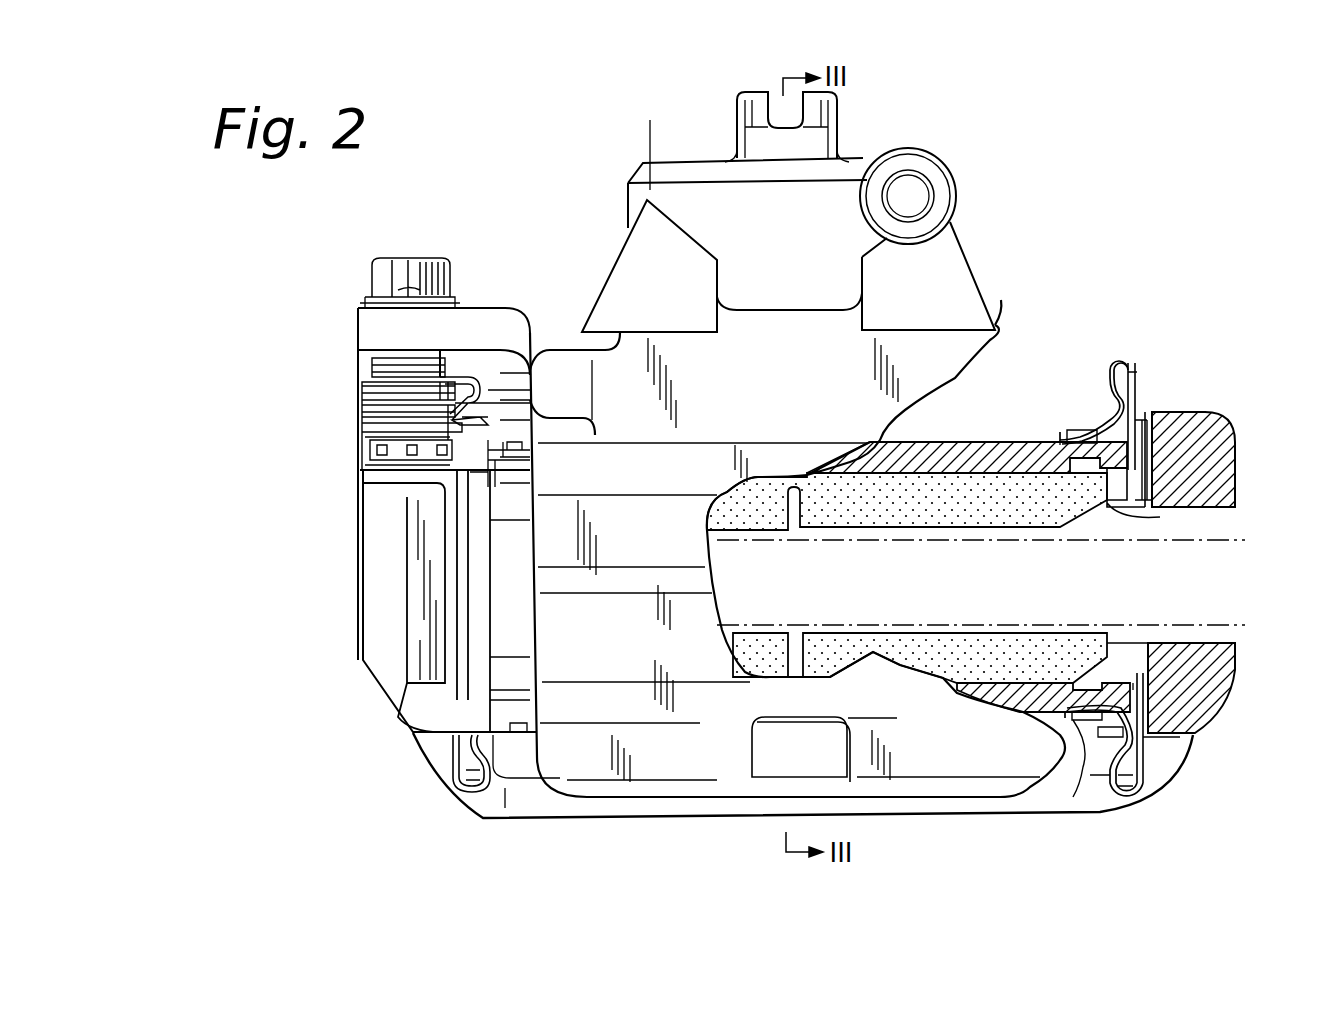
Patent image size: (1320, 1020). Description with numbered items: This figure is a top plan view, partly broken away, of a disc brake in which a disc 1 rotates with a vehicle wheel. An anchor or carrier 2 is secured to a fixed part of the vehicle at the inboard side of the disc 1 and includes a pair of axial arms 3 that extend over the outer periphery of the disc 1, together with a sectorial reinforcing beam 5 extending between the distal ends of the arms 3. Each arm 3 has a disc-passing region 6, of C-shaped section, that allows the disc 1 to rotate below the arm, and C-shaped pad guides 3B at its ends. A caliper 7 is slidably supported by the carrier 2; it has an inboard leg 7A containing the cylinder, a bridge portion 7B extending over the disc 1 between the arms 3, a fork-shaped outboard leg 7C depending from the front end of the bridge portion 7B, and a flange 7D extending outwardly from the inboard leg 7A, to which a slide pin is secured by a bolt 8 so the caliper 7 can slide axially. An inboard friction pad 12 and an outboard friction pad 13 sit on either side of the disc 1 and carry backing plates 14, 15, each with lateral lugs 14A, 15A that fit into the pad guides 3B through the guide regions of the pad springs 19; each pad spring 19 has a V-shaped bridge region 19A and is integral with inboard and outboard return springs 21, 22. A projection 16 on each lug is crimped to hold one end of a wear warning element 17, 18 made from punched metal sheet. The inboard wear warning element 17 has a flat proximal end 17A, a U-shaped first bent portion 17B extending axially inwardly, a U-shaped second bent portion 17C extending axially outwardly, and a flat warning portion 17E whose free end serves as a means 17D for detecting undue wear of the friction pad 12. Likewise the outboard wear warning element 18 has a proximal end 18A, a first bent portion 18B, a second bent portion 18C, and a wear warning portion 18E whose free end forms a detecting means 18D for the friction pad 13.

The disc 1 is at (1245, 588).
The carrier 2 is at (352, 505).
The axial arm 3 is at (385, 595).
The pad guide 3B is at (1185, 508).
The reinforcing beam 5 is at (942, 803).
The disc-passing region 6 is at (1205, 640).
The caliper 7 is at (990, 268).
The inboard leg 7A is at (657, 176).
The bridge portion 7B is at (640, 663).
The outboard leg 7C is at (980, 760).
The flange 7D is at (372, 326).
The bolt 8 is at (405, 270).
The inboard friction pad 12 is at (965, 495).
The outboard friction pad 13 is at (760, 662).
The backing plate 14 is at (1020, 455).
The lateral lug 14A is at (1180, 458).
The backing plate 15 is at (1027, 702).
The lateral lug 15A is at (1145, 718).
The projection 16 is at (1073, 430).
The inboard wear warning element 17 is at (480, 363).
The proximal end 17A is at (1058, 440).
The first bent portion 17B is at (1108, 400).
The second bent portion 17C is at (1122, 345).
The wear detecting means 17D is at (1150, 480).
The warning portion 17E is at (1150, 440).
The outboard wear warning element 18 is at (445, 782).
The proximal end 18A is at (1070, 735).
The first bent portion 18B is at (1145, 745).
The second bent portion 18C is at (490, 812).
The wear detecting means 18D is at (1150, 686).
The wear warning portion 18E is at (1145, 760).
The pad spring 19 is at (1156, 460).
The bridge region 19A is at (467, 632).
The inboard return spring 21 is at (470, 372).
The outboard return spring 22 is at (470, 795).